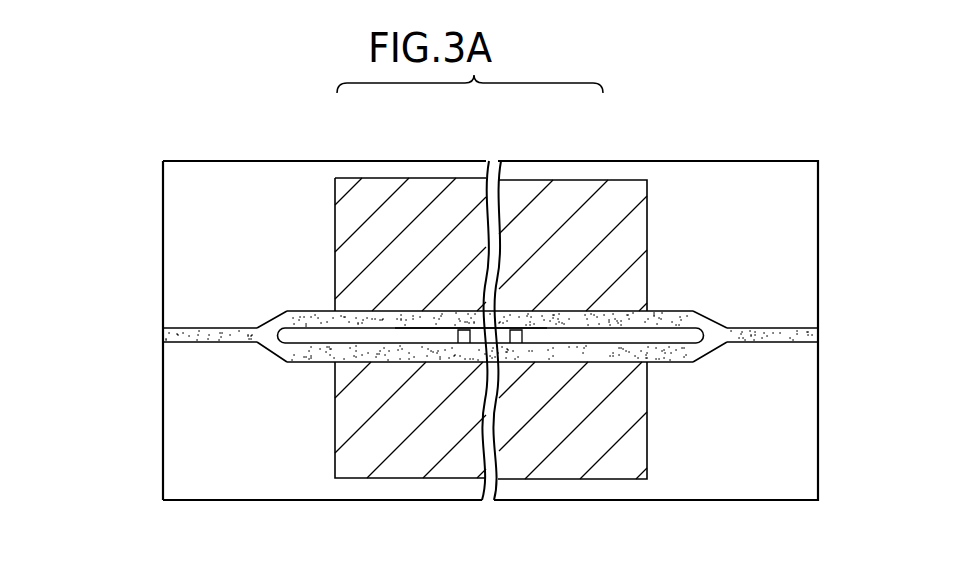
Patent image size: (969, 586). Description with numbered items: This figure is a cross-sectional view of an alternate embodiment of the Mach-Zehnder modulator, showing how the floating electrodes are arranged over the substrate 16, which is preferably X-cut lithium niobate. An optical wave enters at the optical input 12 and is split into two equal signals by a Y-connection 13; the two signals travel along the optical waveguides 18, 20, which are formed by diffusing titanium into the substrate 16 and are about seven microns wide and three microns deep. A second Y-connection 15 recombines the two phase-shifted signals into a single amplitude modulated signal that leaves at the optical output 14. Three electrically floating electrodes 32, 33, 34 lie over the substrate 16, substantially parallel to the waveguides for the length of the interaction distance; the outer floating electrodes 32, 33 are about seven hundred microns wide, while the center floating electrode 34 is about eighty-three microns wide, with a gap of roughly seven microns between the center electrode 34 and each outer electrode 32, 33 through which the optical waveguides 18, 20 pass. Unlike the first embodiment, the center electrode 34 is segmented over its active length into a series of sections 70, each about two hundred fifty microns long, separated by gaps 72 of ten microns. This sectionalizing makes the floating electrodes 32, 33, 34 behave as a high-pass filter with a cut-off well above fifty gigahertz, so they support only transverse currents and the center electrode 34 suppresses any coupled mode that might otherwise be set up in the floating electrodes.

The optical input 12 is at (167, 335).
The Y-connection 13 is at (266, 322).
The optical output 14 is at (812, 340).
The second Y-connection 15 is at (715, 327).
The substrate 16 is at (792, 455).
The optical waveguide 18 is at (313, 313).
The optical waveguide 20 is at (313, 353).
The outer floating electrode 32 is at (610, 212).
The outer floating electrode 33 is at (620, 460).
The center floating electrode 34 is at (648, 339).
The sections 70 is at (547, 333).
The gaps 72 is at (468, 337).